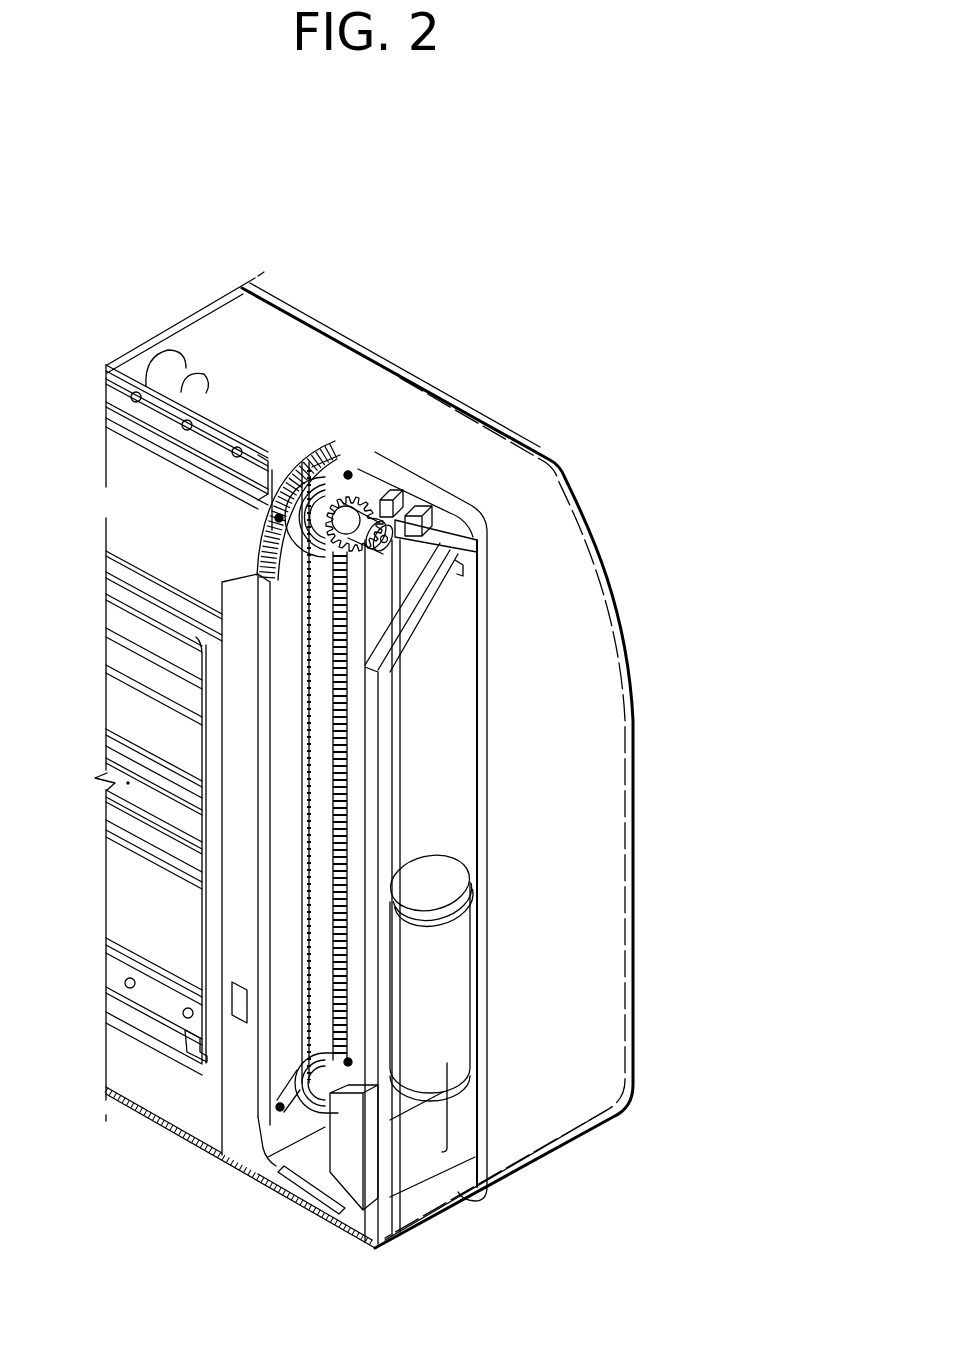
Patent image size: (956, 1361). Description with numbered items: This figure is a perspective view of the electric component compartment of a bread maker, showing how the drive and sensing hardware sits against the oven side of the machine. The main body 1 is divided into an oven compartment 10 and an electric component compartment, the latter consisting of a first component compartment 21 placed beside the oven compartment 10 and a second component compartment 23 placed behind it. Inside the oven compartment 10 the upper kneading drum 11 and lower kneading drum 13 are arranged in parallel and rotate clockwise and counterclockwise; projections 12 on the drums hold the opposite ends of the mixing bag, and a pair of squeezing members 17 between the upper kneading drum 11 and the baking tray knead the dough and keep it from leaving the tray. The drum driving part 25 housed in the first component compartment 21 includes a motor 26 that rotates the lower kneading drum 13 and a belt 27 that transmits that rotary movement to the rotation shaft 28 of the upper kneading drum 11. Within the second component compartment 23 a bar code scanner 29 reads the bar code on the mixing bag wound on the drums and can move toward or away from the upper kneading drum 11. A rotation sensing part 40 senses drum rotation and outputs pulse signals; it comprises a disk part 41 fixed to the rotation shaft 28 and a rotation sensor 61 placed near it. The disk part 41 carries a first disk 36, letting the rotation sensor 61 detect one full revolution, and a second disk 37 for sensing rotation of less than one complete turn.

The main body 1 is at (606, 546).
The oven compartment 10 is at (135, 718).
The upper kneading drum 11 is at (145, 422).
The projections 12 is at (130, 396).
The lower kneading drum 13 is at (145, 1010).
The squeezing members 17 is at (128, 590).
The first component compartment 21 is at (450, 777).
The second component compartment 23 is at (292, 345).
The drum driving part 25 is at (257, 1278).
The motor 26 is at (353, 1165).
The belt 27 is at (303, 1115).
The rotation shaft 28 is at (338, 462).
The bar code scanner 29 is at (165, 370).
The first disk 36 is at (405, 513).
The second disk 37 is at (355, 505).
The rotation sensing part 40 is at (460, 409).
The disk part 41 is at (425, 423).
The rotation sensor 61 is at (438, 513).